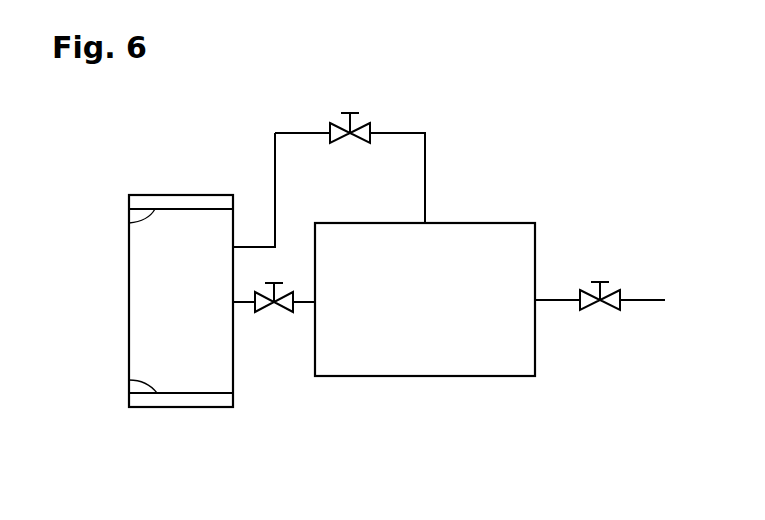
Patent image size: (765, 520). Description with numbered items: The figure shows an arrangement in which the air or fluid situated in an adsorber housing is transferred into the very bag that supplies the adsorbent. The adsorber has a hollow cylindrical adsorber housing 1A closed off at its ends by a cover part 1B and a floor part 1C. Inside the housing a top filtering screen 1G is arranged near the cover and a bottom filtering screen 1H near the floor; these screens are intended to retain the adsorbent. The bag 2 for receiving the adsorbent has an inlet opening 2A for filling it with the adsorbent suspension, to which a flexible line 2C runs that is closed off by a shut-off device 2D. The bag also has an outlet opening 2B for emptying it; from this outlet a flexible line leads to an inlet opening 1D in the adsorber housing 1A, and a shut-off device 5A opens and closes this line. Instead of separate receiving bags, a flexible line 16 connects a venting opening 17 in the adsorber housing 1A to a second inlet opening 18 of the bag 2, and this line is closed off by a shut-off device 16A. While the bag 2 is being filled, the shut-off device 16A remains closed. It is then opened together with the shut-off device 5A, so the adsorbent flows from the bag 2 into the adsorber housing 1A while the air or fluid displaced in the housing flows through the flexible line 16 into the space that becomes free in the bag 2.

The adsorber housing 1A is at (129, 300).
The cover part 1B is at (184, 195).
The floor part 1C is at (182, 407).
The inlet opening 1D is at (236, 305).
The top filtering screen 1G is at (129, 223).
The bottom filtering screen 1H is at (129, 380).
The bag 2 is at (580, 250).
The inlet opening 2A is at (538, 298).
The outlet opening 2B is at (312, 305).
The flexible line 2C is at (638, 302).
The shut-off device 2D is at (612, 290).
The shut-off device 5A is at (283, 290).
The flexible line 16 is at (300, 133).
The shut-off device 16A is at (362, 125).
The venting opening 17 is at (243, 240).
The second inlet opening 18 is at (427, 223).